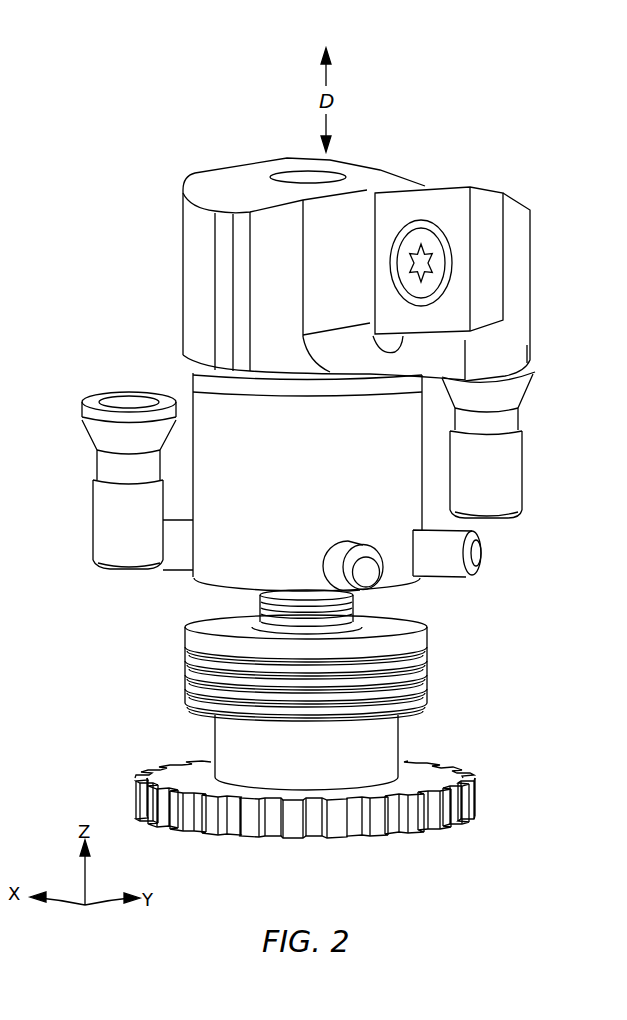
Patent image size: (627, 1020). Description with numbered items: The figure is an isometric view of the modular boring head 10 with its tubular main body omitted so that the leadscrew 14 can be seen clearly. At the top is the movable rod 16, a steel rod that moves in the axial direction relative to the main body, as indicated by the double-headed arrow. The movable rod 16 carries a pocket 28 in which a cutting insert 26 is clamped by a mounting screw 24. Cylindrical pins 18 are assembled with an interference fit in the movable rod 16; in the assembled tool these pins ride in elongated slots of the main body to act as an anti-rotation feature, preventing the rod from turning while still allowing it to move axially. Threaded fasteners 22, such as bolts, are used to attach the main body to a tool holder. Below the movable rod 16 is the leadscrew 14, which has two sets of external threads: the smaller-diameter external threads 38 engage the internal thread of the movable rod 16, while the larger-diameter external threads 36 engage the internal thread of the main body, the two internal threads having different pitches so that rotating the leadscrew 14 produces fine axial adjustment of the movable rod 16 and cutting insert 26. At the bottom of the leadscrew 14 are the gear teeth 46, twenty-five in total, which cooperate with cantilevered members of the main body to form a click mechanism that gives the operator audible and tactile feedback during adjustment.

The modular boring head 10 is at (93, 156).
The leadscrew 14 is at (318, 702).
The movable rod 16 is at (183, 268).
The cylindrical pins 18 is at (483, 568).
The threaded fasteners 22 is at (505, 473).
The mounting screw 24 is at (447, 245).
The cutting insert 26 is at (455, 303).
The pocket 28 is at (496, 323).
The external threads 36 is at (187, 667).
The external threads 38 is at (262, 598).
The gear teeth 46 is at (477, 793).